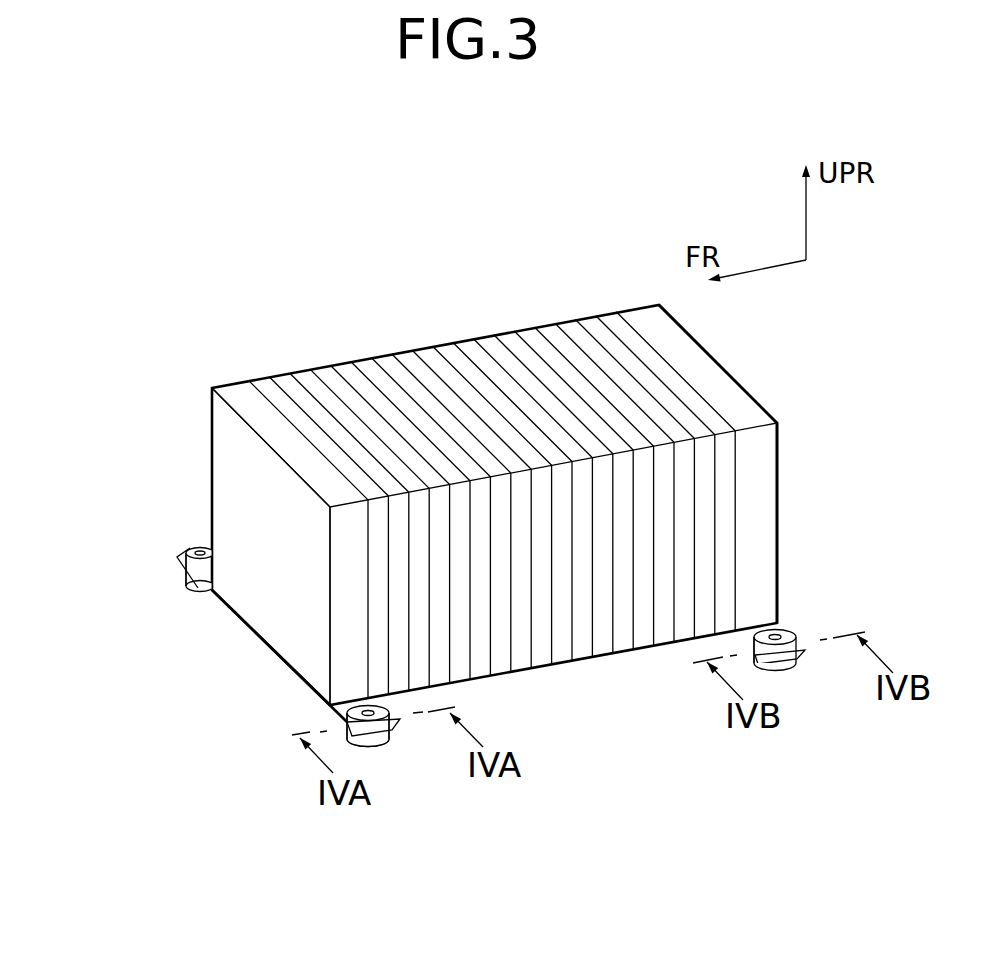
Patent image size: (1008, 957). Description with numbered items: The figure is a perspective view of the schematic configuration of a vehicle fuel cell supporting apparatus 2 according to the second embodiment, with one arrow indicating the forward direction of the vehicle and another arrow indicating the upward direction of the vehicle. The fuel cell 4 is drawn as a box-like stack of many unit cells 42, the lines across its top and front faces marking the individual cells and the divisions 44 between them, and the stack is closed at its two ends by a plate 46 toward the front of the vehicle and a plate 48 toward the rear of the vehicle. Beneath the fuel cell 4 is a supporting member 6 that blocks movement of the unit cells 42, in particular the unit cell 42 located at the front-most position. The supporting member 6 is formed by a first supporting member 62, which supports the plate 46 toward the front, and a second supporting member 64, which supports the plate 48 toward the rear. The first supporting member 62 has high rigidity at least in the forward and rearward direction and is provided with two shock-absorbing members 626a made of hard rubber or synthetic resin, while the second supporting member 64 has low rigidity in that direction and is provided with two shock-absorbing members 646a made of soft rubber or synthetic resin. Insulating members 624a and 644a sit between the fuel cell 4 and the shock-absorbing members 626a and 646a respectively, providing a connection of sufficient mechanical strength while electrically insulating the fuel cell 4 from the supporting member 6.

The vehicle fuel cell supporting apparatus 2 is at (360, 300).
The fuel cell 4 is at (590, 316).
The unit cells 42 is at (390, 358).
The spacers 44 is at (638, 650).
The plate 46 is at (242, 393).
The plate 48 is at (685, 350).
The supporting member 6 is at (474, 744).
The first supporting member 62 is at (294, 714).
The second supporting member 64 is at (732, 728).
The insulating member 624a is at (345, 703).
The shock-absorbing member 626a is at (188, 570).
The insulating member 644a is at (749, 632).
The shock-absorbing member 646a is at (798, 656).